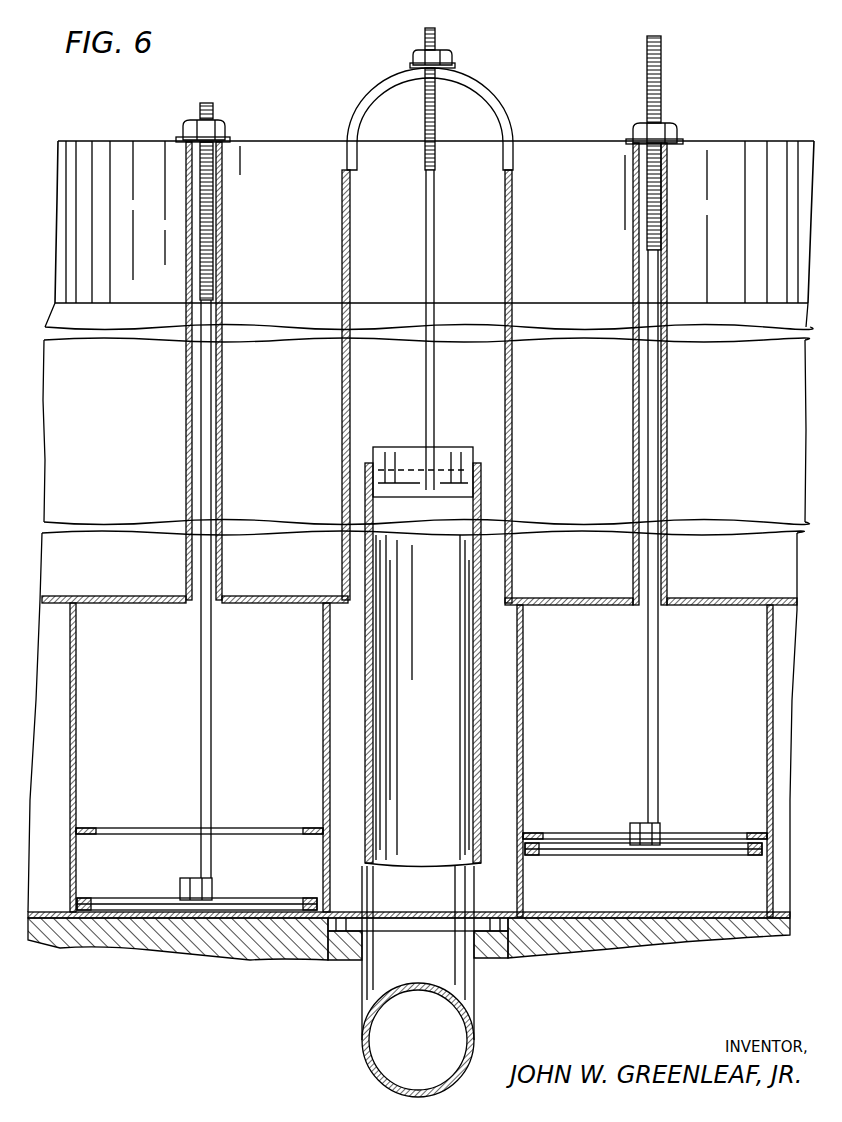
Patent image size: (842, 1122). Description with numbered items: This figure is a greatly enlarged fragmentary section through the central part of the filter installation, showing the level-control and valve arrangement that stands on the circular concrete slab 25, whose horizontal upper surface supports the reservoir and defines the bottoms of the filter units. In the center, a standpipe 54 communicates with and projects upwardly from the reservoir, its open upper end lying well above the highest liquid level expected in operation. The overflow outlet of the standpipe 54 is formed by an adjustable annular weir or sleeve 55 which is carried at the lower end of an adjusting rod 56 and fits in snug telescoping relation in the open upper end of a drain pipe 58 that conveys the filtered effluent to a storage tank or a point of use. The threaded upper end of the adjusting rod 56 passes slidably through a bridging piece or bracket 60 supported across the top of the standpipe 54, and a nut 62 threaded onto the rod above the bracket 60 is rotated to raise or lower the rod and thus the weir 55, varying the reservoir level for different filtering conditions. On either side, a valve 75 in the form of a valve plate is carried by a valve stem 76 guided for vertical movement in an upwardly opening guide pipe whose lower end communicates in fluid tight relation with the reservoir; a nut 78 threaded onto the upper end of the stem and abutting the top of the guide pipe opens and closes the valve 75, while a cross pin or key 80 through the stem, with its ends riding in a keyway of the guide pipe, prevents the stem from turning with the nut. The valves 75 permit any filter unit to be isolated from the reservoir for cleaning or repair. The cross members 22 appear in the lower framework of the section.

The cross bar 22 is at (302, 828).
The circular concrete slab 25 is at (666, 940).
The standpipe 54 is at (512, 414).
The adjustable annular weir or sleeve 55 is at (373, 452).
The adjusting rod 56 is at (438, 40).
The drain pipe 58 is at (368, 508).
The bridging piece or bracket 60 is at (372, 95).
The nut 62 is at (452, 60).
The valve 75 is at (261, 884).
The valve stem 76 is at (214, 111).
The nut 78 is at (183, 132).
The cross pin or key 80 is at (204, 306).